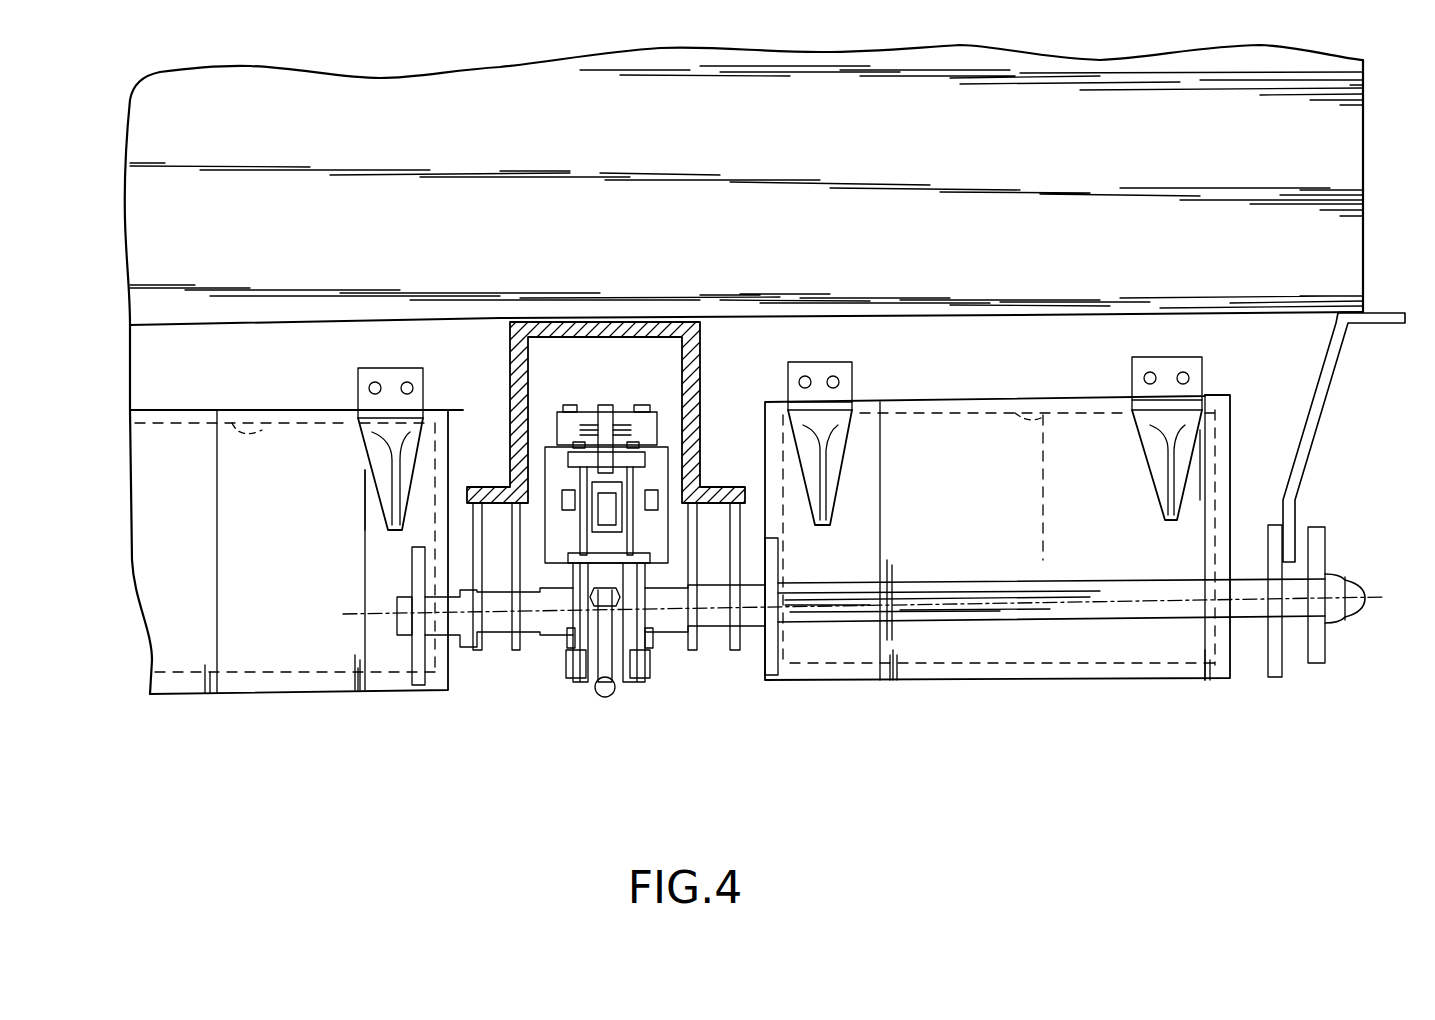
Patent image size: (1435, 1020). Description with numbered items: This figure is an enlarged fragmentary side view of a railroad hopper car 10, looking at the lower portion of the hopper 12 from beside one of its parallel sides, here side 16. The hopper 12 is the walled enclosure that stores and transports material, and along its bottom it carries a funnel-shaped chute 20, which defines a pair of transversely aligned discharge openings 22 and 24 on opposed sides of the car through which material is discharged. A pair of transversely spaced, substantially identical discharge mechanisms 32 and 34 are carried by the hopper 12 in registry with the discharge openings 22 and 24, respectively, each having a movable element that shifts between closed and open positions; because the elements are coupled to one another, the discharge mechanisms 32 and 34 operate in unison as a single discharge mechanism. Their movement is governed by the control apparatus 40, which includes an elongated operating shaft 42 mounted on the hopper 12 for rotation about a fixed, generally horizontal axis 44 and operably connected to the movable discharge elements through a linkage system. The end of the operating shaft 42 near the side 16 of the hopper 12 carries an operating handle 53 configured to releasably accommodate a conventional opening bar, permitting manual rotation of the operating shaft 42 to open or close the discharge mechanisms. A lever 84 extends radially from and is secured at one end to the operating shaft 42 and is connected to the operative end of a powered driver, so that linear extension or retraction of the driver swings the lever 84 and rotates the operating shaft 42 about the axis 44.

The railroad hopper car 10 is at (1382, 132).
The hopper 12 is at (118, 138).
The side 16 is at (1365, 204).
The funnel-shaped chute 20 is at (1307, 357).
The discharge opening 22 is at (236, 398).
The discharge opening 24 is at (1023, 398).
The discharge mechanism 32 is at (358, 710).
The discharge mechanism 34 is at (1075, 710).
The control apparatus 40 is at (528, 718).
The operating shaft 42 is at (840, 613).
The axis 44 is at (970, 603).
The operating handle 53 is at (1363, 578).
The lever 84 is at (600, 503).